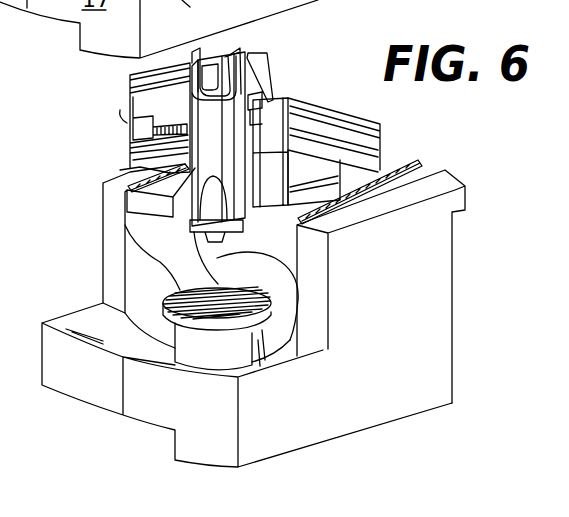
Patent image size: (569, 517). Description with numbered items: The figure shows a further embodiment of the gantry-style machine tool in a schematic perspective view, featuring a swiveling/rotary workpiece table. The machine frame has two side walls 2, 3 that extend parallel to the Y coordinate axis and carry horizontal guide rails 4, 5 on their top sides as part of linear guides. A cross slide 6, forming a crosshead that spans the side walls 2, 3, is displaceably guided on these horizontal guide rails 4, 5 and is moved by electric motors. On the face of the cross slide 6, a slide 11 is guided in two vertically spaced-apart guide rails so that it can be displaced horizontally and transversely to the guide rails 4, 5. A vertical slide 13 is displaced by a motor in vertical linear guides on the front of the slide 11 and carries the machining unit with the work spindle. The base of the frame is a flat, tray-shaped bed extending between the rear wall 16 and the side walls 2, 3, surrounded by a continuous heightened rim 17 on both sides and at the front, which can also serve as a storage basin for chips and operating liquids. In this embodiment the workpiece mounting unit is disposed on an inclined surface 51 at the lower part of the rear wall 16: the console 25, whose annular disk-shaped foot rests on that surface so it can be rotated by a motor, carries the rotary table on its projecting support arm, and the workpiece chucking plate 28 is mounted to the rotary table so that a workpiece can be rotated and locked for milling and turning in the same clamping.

The side wall 2 is at (114, 272).
The side wall 3 is at (392, 326).
The horizontal guide rail 4 is at (122, 176).
The horizontal guide rail 5 is at (420, 167).
The cross slide 6 is at (360, 140).
The slide 11 is at (272, 152).
The vertical slide 13 is at (272, 100).
The rear wall 16 is at (268, 243).
The heightened rim 17 is at (206, 410).
The console 25 is at (217, 283).
The workpiece chucking plate 28 is at (258, 343).
The inclined surface 51 is at (212, 252).